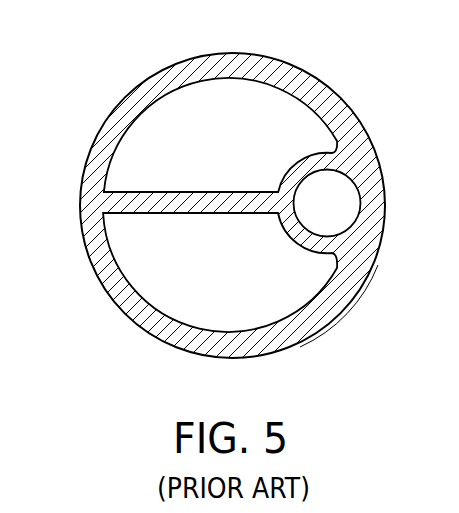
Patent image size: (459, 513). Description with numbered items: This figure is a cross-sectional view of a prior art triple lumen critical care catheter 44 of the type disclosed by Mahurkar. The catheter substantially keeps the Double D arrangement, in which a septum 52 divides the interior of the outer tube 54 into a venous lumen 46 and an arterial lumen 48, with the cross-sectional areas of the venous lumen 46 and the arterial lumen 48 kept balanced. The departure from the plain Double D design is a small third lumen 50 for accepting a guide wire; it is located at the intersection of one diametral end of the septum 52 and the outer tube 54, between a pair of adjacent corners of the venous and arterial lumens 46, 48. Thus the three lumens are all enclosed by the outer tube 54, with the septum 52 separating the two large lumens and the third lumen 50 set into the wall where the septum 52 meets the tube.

The triple lumen critical care catheter 44 is at (142, 332).
The venous lumen 46 is at (229, 272).
The arterial lumen 48 is at (227, 150).
The small third lumen 50 is at (362, 191).
The septum 52 is at (167, 192).
The outer tube 54 is at (252, 65).